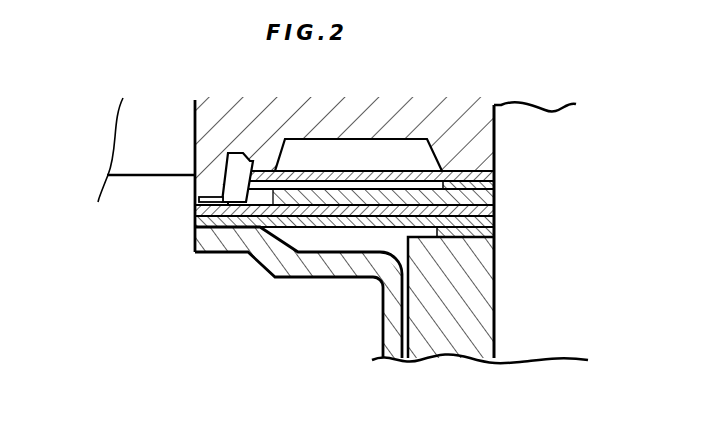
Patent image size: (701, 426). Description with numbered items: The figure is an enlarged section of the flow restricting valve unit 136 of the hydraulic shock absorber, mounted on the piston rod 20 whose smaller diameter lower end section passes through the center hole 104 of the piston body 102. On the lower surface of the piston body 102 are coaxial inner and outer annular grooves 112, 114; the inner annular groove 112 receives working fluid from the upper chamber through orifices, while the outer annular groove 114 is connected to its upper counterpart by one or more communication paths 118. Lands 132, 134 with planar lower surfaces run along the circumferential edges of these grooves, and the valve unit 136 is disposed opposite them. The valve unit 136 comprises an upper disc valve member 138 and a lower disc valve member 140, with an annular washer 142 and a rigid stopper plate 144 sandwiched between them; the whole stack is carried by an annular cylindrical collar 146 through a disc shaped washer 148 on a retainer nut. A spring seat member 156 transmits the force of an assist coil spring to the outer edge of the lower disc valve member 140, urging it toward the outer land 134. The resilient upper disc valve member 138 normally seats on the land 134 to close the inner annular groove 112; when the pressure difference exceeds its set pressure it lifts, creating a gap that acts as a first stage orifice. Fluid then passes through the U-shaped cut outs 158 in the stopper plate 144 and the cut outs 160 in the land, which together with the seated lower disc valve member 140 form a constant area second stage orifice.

The piston rod 20 is at (517, 346).
The piston body 102 is at (220, 122).
The center hole 104 is at (432, 168).
The inner annular groove 112 is at (368, 139).
The outer annular groove 114 is at (212, 180).
The communication path 118 is at (130, 130).
The land 132 is at (262, 168).
The land 134 is at (202, 172).
The valve unit 136 is at (190, 219).
The upper disc valve member 138 is at (470, 148).
The lower disc valve member 140 is at (193, 228).
The annular washer 142 is at (478, 176).
The stopper plate 144 is at (478, 200).
The annular cylindrical collar 146 is at (478, 315).
The disc shaped washer 148 is at (478, 238).
The spring seat member 156 is at (383, 318).
The cut out 158 is at (245, 198).
The cut out 160 is at (193, 200).